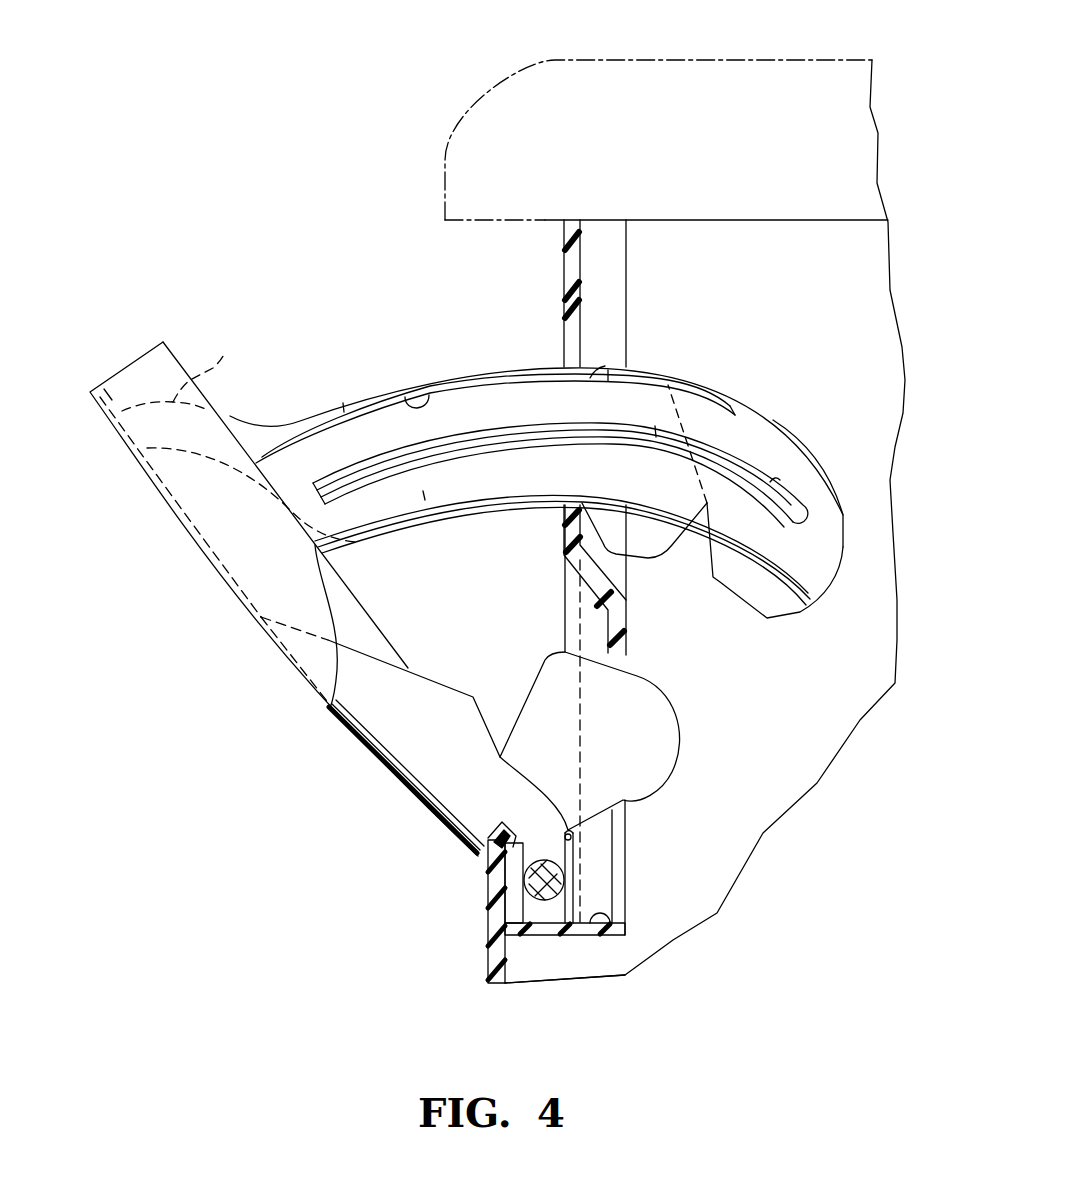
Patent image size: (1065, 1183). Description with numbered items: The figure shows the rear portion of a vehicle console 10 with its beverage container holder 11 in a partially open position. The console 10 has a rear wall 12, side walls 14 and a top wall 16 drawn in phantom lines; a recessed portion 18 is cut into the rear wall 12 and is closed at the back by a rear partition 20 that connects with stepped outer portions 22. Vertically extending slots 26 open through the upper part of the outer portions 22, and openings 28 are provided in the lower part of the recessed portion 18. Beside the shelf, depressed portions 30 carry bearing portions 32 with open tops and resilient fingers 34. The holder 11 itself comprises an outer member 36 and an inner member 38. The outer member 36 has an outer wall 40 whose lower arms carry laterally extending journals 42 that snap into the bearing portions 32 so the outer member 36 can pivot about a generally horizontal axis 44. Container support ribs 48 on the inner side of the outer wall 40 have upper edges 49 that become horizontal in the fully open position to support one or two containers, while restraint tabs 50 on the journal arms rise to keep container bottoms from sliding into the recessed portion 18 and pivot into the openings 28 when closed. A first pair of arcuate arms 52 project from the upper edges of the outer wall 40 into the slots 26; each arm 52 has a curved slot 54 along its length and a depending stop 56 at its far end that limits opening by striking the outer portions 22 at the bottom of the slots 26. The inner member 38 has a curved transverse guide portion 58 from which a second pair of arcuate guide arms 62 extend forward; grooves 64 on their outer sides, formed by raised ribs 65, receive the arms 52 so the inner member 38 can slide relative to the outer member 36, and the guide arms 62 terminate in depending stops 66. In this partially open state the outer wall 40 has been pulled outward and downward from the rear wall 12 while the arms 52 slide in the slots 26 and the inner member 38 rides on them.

The console 10 is at (257, 125).
The beverage container holder 11 is at (130, 350).
The rear wall 12 is at (493, 892).
The side walls 14 is at (715, 877).
The top wall 16 is at (650, 60).
The recessed portion 18 is at (548, 292).
The rear partition 20 is at (612, 283).
The stepped outer portions 22 is at (562, 234).
The slots 26 is at (565, 348).
The openings 28 is at (622, 826).
The depressed portions 30 is at (612, 923).
The bearing portions 32 is at (550, 880).
The resilient fingers 34 is at (567, 860).
The outer member 36 is at (226, 594).
The inner member 38 is at (252, 410).
The outer wall 40 is at (172, 506).
The journals 42 is at (530, 902).
The horizontal axis 44 is at (496, 858).
The container support ribs 48 is at (403, 743).
The upper edges 49 is at (444, 686).
The restraint tabs 50 is at (652, 728).
The arcuate arms 52 is at (773, 426).
The curved slot 54 is at (750, 482).
The depending stop 56 is at (712, 585).
The transverse guide portion 58 is at (239, 434).
The arcuate guide arms 62 is at (350, 392).
The grooves 64 is at (412, 392).
The raised ribs 65 is at (590, 378).
The depending stops 66 is at (575, 558).